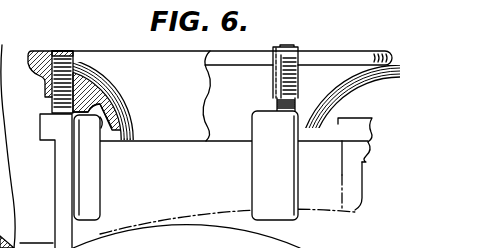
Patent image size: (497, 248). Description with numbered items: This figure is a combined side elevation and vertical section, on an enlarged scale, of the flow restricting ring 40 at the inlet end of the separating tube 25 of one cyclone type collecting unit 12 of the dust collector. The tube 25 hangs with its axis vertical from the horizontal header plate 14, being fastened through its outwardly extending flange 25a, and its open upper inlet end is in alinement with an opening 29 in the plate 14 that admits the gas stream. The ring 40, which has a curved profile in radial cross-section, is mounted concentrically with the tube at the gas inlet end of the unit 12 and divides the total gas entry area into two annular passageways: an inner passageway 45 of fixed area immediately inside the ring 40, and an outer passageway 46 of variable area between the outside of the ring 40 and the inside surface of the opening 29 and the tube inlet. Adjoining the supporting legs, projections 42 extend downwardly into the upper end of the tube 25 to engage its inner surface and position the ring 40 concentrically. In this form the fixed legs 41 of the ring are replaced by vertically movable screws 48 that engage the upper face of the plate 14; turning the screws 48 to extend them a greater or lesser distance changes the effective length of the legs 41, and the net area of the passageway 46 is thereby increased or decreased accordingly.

The cyclone type collecting unit 12 is at (373, 139).
The header plate 14 is at (47, 130).
The separating tube 25 is at (367, 212).
The outwardly extending flange 25a is at (372, 153).
The opening in header plate 29 is at (340, 123).
The ring 40 is at (366, 50).
The legs 41 is at (52, 96).
The projections 42 is at (92, 180).
The inner passageway 45 is at (134, 62).
The outer passageway 46 is at (332, 114).
The screw 48 is at (75, 51).